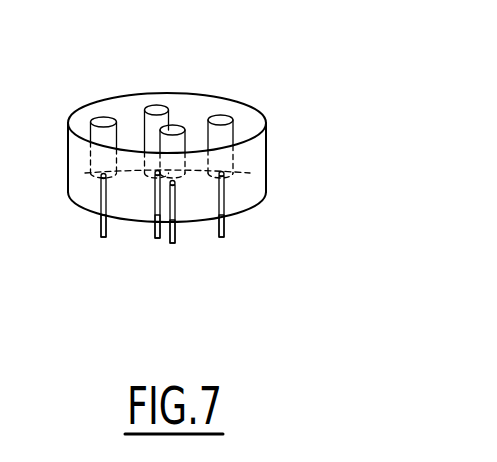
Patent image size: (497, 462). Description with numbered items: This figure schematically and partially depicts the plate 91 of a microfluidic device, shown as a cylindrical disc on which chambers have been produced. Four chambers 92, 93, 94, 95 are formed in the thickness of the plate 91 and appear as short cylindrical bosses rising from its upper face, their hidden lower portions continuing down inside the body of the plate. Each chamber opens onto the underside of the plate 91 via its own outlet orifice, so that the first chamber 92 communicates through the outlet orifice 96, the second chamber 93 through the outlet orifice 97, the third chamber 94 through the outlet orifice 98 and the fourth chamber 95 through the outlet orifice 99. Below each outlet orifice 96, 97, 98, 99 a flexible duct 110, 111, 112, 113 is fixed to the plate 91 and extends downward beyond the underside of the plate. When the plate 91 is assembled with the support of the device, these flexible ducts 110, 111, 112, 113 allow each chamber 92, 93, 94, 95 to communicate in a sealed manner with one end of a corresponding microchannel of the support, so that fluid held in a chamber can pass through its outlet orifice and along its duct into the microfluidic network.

The plate 91 is at (253, 155).
The chamber 92 is at (102, 127).
The chamber 93 is at (157, 110).
The chamber 94 is at (175, 134).
The chamber 95 is at (221, 125).
The outlet orifice 96 is at (98, 207).
The outlet orifice 97 is at (152, 205).
The outlet orifice 98 is at (176, 210).
The outlet orifice 99 is at (226, 203).
The flexible duct 110 is at (101, 237).
The flexible duct 111 is at (156, 240).
The flexible duct 112 is at (173, 244).
The flexible duct 113 is at (223, 236).